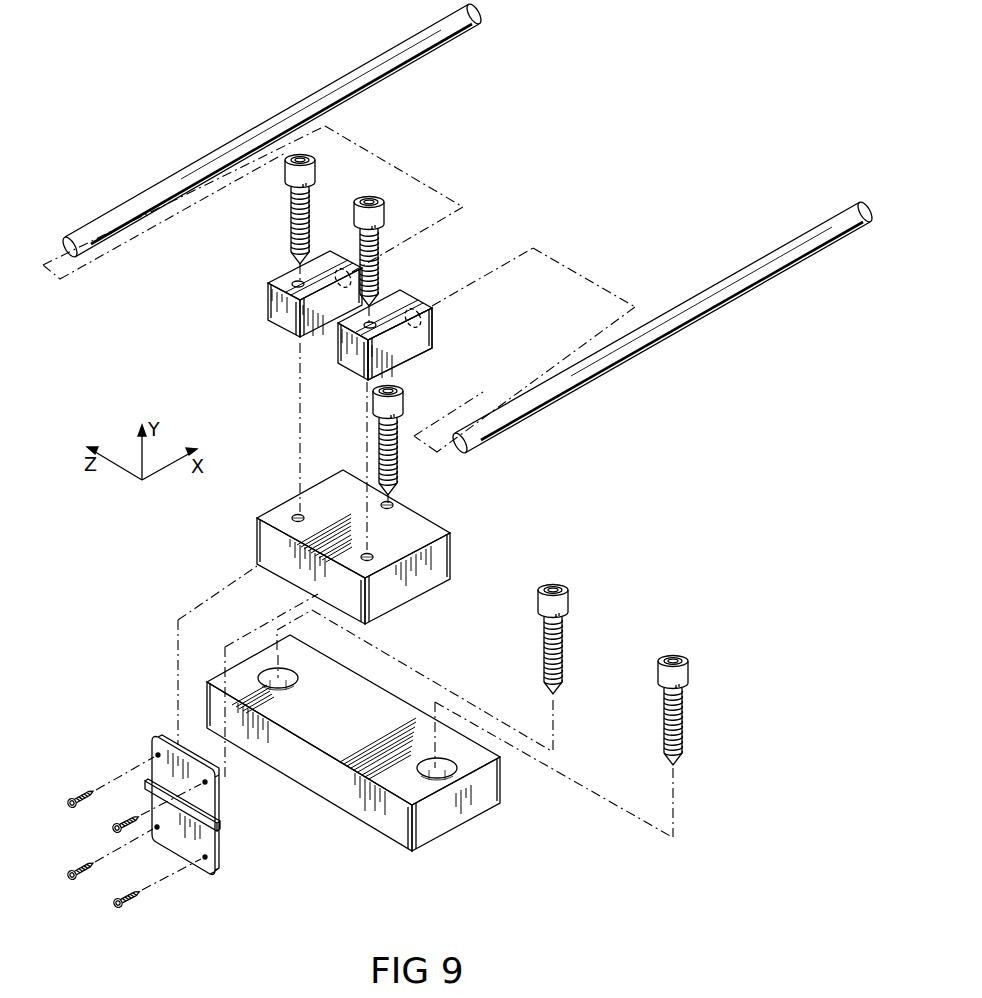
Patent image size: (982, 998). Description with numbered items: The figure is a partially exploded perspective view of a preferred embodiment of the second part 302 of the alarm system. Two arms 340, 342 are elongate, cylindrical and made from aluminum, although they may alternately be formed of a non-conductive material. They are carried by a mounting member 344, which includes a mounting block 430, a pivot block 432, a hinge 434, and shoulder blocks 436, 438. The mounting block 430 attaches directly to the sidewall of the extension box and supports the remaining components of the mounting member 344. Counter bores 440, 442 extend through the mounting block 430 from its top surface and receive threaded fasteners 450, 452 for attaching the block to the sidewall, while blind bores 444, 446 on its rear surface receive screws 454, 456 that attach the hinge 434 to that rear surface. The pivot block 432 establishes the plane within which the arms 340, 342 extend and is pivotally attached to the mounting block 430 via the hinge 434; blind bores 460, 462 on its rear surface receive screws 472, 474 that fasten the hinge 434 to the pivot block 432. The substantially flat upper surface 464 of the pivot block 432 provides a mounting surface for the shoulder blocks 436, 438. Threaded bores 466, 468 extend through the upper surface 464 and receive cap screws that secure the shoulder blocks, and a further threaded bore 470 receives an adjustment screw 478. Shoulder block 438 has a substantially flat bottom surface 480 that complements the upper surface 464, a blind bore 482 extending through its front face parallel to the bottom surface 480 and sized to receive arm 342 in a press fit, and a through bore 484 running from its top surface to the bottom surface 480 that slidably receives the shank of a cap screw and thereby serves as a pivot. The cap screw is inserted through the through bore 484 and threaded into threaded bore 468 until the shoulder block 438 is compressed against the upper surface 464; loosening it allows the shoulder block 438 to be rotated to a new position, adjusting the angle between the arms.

The second part 302 is at (175, 116).
The arm 340 is at (338, 83).
The arm 342 is at (755, 270).
The mounting member 344 is at (245, 404).
The mounting block 430 is at (442, 826).
The pivot block 432 is at (392, 596).
The hinge 434 is at (208, 870).
The shoulder block 436 is at (277, 283).
The shoulder block 438 is at (398, 292).
The counter bore 440 is at (294, 686).
The counter bore 442 is at (456, 766).
The blind bore 444 is at (287, 755).
The blind bore 446 is at (333, 781).
The threaded fastener 450 is at (572, 608).
The threaded fastener 452 is at (688, 680).
The screw 454 is at (72, 880).
The screw 456 is at (124, 905).
The blind bore 460 is at (292, 562).
The blind bore 462 is at (336, 584).
The upper surface 464 is at (428, 530).
The threaded bore 466 is at (293, 517).
The threaded bore 468 is at (378, 555).
The threaded bore 470 is at (393, 504).
The screw 472 is at (70, 800).
The screw 474 is at (114, 830).
The adjustment screw 478 is at (402, 404).
The bottom surface 480 is at (420, 345).
The blind bore 482 is at (433, 317).
The through bore 484 is at (380, 324).